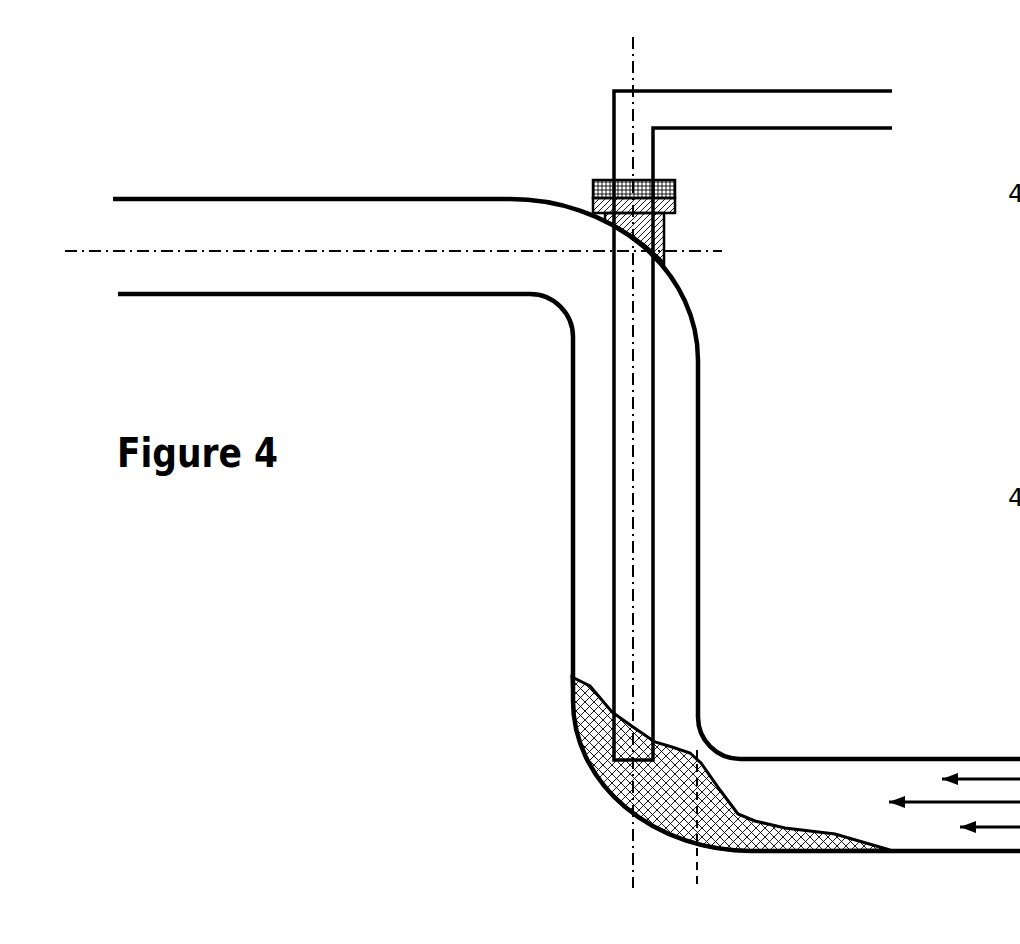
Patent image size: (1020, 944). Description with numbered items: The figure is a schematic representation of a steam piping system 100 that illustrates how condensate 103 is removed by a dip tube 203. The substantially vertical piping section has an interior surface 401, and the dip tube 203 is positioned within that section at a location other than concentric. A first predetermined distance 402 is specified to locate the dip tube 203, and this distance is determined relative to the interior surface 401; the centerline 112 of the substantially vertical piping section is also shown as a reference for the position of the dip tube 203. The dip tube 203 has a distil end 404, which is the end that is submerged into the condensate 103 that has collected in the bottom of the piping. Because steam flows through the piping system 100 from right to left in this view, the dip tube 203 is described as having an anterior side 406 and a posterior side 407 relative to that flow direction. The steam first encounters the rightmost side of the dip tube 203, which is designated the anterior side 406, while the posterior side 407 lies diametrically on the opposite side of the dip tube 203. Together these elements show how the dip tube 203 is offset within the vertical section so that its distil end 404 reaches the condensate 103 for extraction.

The steam piping system 100 is at (343, 618).
The condensate 103 is at (566, 525).
The centerline of substantially vertical piping section 112 is at (616, 155).
The dip tube 203 is at (605, 673).
The interior surface 401 is at (688, 457).
The first predetermined distance 402 is at (740, 872).
The distil end 404 is at (667, 733).
The anterior side 406 is at (654, 532).
The posterior side 407 is at (613, 532).